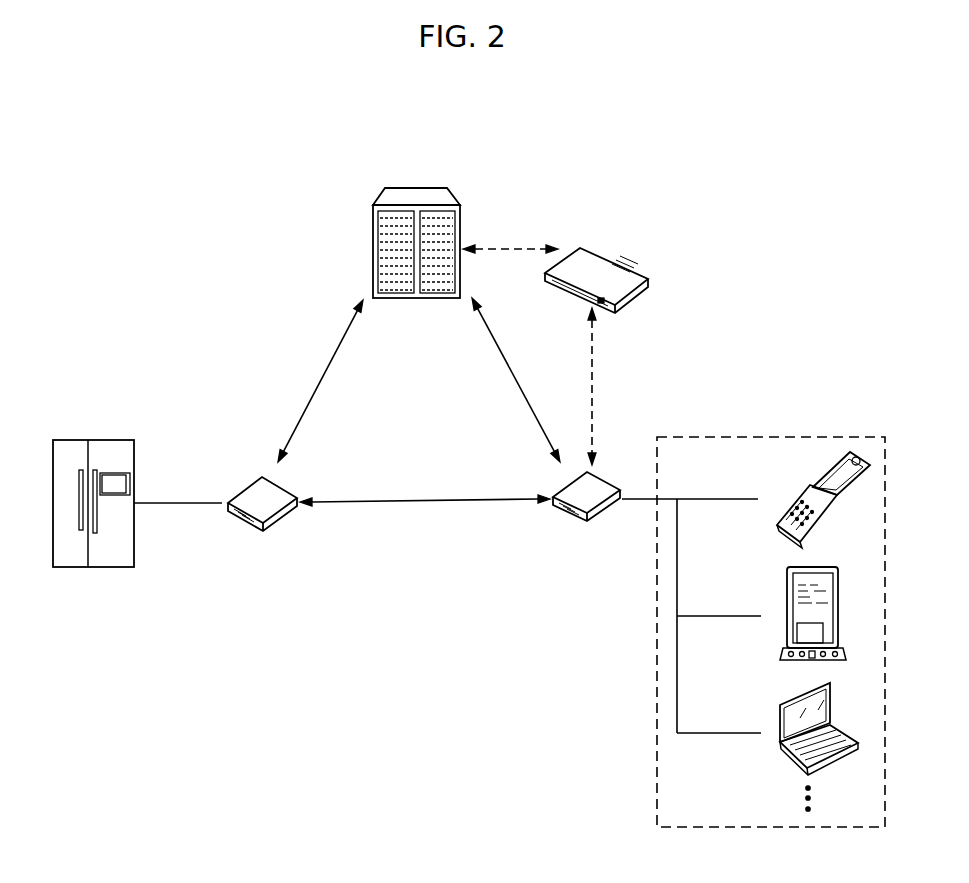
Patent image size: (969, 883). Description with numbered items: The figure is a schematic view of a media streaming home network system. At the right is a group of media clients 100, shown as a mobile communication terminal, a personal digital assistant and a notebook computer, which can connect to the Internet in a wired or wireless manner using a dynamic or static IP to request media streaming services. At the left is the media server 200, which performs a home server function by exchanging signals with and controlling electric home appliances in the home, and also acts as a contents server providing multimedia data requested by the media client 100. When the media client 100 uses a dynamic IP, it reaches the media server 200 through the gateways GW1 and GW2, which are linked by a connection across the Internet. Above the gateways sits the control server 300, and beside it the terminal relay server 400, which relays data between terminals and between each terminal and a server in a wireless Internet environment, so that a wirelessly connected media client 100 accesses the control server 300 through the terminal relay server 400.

The media client 100 is at (808, 437).
The media server 200 is at (118, 440).
The control server 300 is at (443, 198).
The terminal relay server 400 is at (595, 268).
The gateway GW1 is at (273, 521).
The gateway GW2 is at (605, 508).